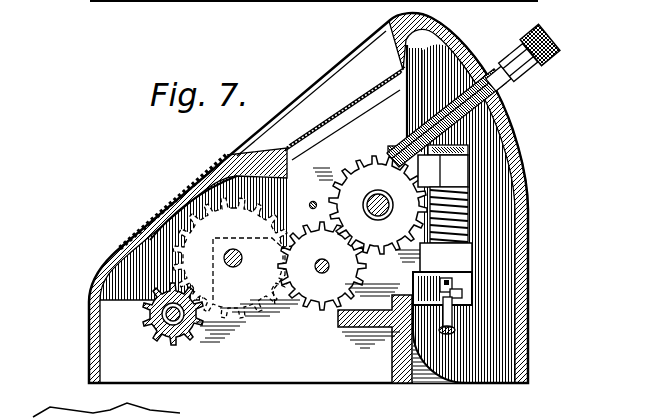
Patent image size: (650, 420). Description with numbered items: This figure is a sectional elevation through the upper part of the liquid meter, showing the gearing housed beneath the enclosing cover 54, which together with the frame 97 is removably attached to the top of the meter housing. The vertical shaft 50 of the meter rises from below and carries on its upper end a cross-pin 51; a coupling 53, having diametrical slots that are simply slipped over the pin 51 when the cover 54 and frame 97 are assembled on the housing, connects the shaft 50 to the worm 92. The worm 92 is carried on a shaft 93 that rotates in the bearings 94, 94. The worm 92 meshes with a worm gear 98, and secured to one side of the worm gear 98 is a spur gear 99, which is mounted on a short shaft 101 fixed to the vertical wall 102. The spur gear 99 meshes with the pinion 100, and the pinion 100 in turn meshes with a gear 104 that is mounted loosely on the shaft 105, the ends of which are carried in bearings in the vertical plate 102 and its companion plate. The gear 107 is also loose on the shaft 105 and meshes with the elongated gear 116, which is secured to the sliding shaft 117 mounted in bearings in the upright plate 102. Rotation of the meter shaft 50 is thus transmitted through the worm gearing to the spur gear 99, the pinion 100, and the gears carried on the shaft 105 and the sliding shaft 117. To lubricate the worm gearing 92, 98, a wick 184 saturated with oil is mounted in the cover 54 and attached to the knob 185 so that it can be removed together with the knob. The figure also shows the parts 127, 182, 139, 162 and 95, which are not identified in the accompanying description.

The enclosing cover 54 is at (528, 182).
The housing side wall 127 is at (90, 358).
The worm 92 is at (505, 208).
The vertical wall 102 is at (410, 90).
The gear 107 is at (213, 208).
The tube 182 is at (350, 97).
The wick 184 is at (492, 120).
The knob 185 is at (560, 50).
The worm gear 98 is at (393, 150).
The spur gear 99 is at (371, 207).
The hub 139 is at (380, 218).
The pinion 100 is at (337, 283).
The short shaft 101 is at (330, 265).
The shaft 105 is at (228, 255).
The gear 104 is at (273, 302).
The sliding shaft 117 is at (142, 327).
The elongated gear 116 is at (180, 345).
The pin 162 is at (312, 205).
The shaft 93 is at (465, 143).
The bearings 94 is at (463, 173).
The pin 51 is at (448, 290).
The coupling 53 is at (468, 292).
The pin 95 is at (468, 298).
The vertical shaft 50 is at (458, 318).
The frame 97 is at (398, 357).